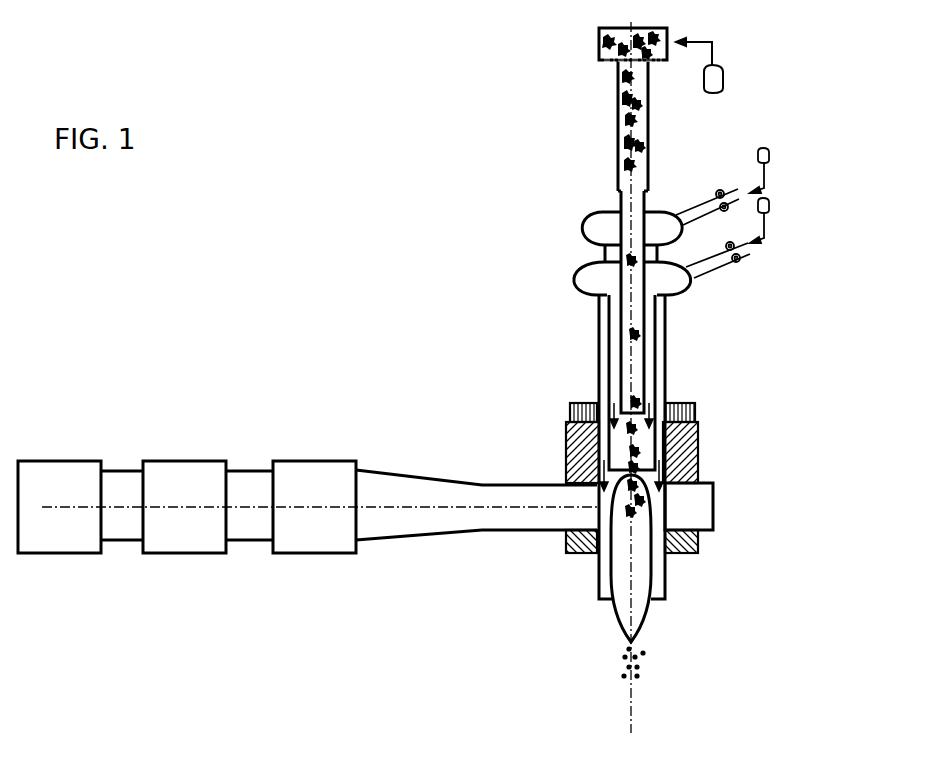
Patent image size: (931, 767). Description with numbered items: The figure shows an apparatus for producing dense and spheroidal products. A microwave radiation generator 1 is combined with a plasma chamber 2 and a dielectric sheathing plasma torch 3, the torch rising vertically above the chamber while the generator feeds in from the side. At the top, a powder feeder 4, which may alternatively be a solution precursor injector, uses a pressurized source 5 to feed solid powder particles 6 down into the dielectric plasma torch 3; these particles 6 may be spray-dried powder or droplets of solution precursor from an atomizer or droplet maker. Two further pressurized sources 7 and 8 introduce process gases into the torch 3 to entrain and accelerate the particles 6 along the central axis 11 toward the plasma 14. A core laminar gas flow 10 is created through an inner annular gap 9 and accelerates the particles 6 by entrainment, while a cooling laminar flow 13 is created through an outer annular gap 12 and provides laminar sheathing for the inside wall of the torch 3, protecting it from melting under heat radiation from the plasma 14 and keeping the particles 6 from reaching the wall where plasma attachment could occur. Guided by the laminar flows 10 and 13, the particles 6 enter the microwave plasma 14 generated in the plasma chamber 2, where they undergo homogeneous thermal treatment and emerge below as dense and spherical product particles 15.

The microwave radiation generator 1 is at (126, 428).
The plasma chamber 2 is at (538, 418).
The dielectric sheathing plasma torch 3 is at (567, 241).
The powder feeder 4 is at (600, 127).
The pressurized source 5 is at (727, 77).
The powder particles 6 is at (642, 147).
The pressurized source 7 is at (778, 155).
The pressurized source 8 is at (778, 203).
The annular gap 9 is at (650, 330).
The core laminar gas flow 10 is at (653, 411).
The axis 11 is at (633, 375).
The annular gap 12 is at (660, 447).
The cooling laminar flow 13 is at (660, 472).
The microwave plasma 14 is at (648, 615).
The product particles 15 is at (647, 670).